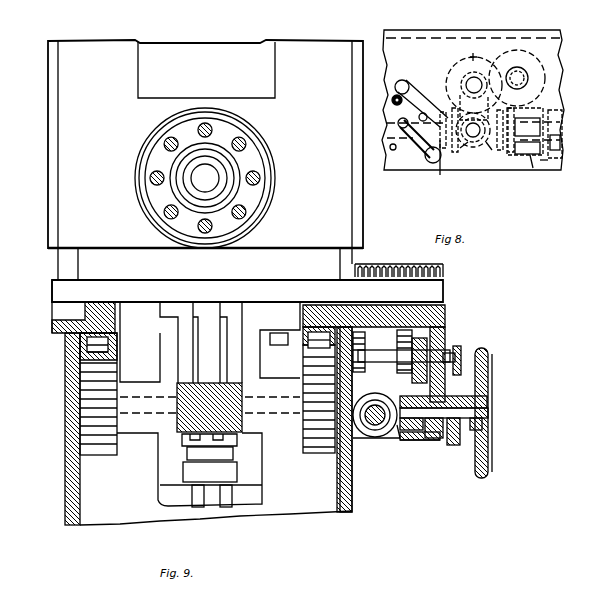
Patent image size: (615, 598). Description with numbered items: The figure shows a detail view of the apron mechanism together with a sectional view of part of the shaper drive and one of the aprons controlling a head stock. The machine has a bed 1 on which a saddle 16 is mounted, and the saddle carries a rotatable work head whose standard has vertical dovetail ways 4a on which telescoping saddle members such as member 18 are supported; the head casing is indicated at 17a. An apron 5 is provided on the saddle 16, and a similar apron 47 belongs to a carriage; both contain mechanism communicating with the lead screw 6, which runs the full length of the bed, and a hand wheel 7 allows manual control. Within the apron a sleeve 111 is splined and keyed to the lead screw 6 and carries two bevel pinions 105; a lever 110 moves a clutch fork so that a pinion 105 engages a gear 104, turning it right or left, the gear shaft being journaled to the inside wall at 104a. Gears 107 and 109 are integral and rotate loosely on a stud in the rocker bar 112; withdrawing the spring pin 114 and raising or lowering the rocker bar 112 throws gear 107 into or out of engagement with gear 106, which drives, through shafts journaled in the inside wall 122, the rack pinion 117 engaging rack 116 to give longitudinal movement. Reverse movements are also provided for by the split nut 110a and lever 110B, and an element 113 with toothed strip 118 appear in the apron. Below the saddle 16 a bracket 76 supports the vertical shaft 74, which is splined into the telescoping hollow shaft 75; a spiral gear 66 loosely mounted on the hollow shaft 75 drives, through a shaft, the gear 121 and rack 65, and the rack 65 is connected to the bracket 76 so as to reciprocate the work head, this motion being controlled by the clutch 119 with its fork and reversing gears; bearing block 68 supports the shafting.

In FIG. 9, the head casing 17a is at (48, 149).
In FIG. 9, the saddle member 18 is at (140, 73).
In FIG. 9, the toothed rack strip 118 is at (444, 270).
In FIG. 9, the saddle 16 is at (444, 286).
In FIG. 9, the vertical dovetail ways 4a is at (83, 317).
In FIG. 9, the gear 121 is at (97, 456).
In FIG. 9, the bearing block 68 is at (108, 341).
In FIG. 9, the rack 65 is at (115, 359).
In FIG. 9, the spiral gear 66 is at (243, 331).
In FIG. 9, the bracket 76 is at (168, 452).
In FIG. 9, the clutch 119 is at (188, 460).
In FIG. 9, the vertical shaft 74 is at (192, 497).
In FIG. 9, the hollow shaft 75 is at (232, 497).
In FIG. 9, the inside wall 122 is at (370, 318).
In FIG. 9, the rack 116 is at (362, 330).
In FIG. 9, the gear 106 is at (400, 330).
In FIG. 8, the gear 106 is at (522, 56).
In FIG. 9, the gear 109 is at (418, 337).
In FIG. 9, the spring pin 114 is at (458, 350).
In FIG. 8, the spring pin 114 is at (405, 84).
In FIG. 9, the hand wheel 7 is at (490, 352).
In FIG. 9, the apron 5 is at (447, 440).
In FIG. 9, the rocker bar 112 is at (430, 438).
In FIG. 8, the rocker bar 112 is at (423, 99).
In FIG. 9, the rack pinion 117 is at (349, 419).
In FIG. 9, the gear 107 is at (385, 390).
In FIG. 8, the gear 107 is at (468, 80).
In FIG. 9, the bevel pinion 105 is at (376, 438).
In FIG. 8, the bevel pinion 105 is at (478, 144).
In FIG. 9, the gear 104 is at (411, 440).
In FIG. 8, the gear 104 is at (508, 114).
In FIG. 9, the inside wall journal 104a is at (414, 445).
In FIG. 9, the bed 1 is at (352, 486).
In FIG. 8, the apron 47 is at (490, 38).
In FIG. 8, the lead screw 6 is at (553, 122).
In FIG. 8, the shaft bearing 113 is at (470, 138).
In FIG. 8, the lever 110 is at (415, 139).
In FIG. 8, the sleeve 111 is at (444, 165).
In FIG. 8, the split nut 110a is at (518, 162).
In FIG. 8, the lever 110B is at (542, 164).